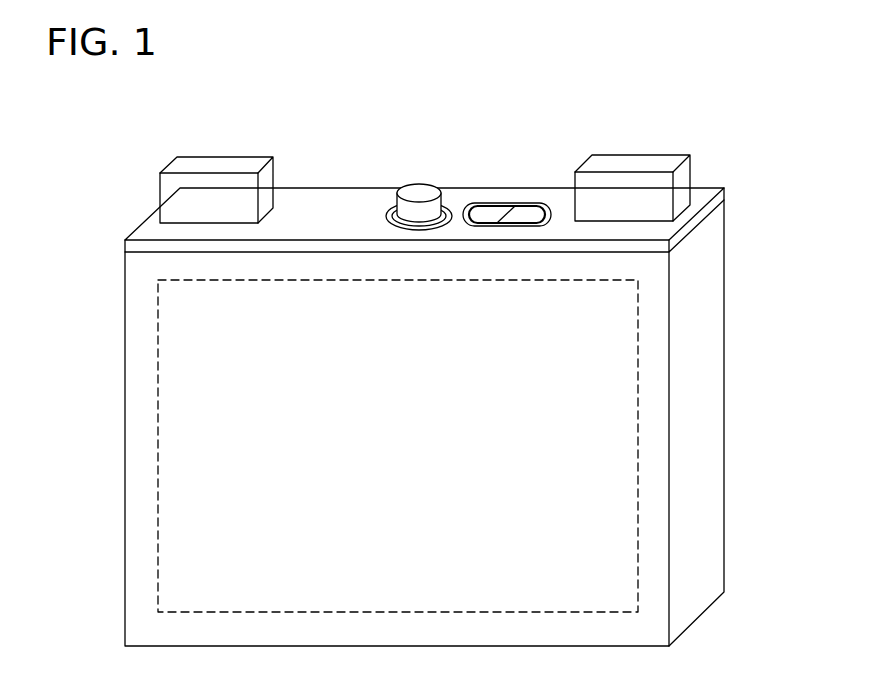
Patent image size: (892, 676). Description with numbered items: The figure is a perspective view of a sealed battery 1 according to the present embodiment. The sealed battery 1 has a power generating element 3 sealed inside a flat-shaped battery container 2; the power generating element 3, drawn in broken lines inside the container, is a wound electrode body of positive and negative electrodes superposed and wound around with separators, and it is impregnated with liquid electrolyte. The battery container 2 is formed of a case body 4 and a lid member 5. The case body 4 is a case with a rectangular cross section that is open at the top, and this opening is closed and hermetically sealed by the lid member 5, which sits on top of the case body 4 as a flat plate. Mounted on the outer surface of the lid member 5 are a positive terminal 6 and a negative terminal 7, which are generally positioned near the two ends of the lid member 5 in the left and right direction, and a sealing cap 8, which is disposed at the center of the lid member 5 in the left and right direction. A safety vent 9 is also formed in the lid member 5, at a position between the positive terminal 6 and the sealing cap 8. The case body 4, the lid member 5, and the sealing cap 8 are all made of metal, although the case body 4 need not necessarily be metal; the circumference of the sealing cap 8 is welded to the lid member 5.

The sealed battery 1 is at (773, 138).
The battery container 2 is at (780, 187).
The power generating element 3 is at (158, 447).
The case body 4 is at (710, 318).
The lid member 5 is at (703, 195).
The positive terminal 6 is at (637, 162).
The negative terminal 7 is at (221, 162).
The sealing cap 8 is at (419, 193).
The safety vent 9 is at (500, 210).